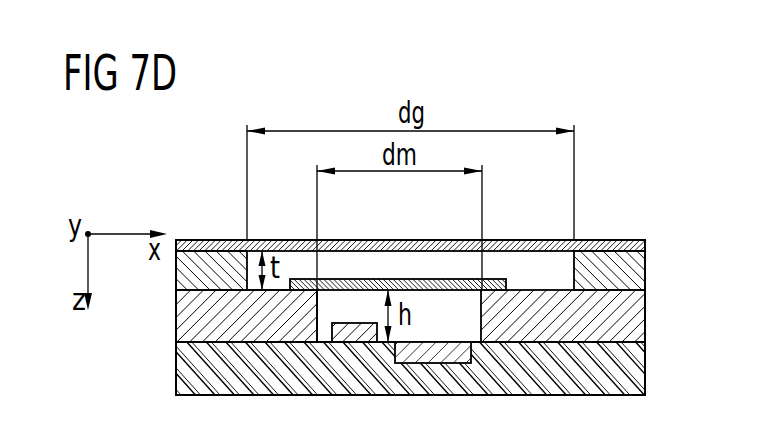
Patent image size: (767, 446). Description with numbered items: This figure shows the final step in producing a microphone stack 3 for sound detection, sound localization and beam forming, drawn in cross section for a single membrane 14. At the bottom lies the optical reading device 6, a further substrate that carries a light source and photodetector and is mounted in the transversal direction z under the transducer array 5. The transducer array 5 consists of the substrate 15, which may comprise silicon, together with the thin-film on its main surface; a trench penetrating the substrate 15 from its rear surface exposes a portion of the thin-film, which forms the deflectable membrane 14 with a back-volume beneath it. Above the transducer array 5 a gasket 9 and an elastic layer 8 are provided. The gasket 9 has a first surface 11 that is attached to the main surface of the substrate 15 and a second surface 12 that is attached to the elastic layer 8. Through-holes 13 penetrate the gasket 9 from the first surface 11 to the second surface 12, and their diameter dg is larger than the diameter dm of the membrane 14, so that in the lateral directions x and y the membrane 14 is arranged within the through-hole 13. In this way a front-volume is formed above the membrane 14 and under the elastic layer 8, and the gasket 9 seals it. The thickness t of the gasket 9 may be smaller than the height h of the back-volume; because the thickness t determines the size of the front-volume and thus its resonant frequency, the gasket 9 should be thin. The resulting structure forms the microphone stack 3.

The microphone stack 3 is at (644, 166).
The transducer array 5 is at (672, 295).
The optical reading device 6 is at (676, 368).
The elastic layer 8 is at (647, 244).
The gasket 9 is at (635, 273).
The first surface 11 is at (199, 292).
The second surface 12 is at (228, 241).
The through-holes 13 is at (397, 242).
The membrane 14 is at (507, 282).
The substrate 15 is at (634, 313).